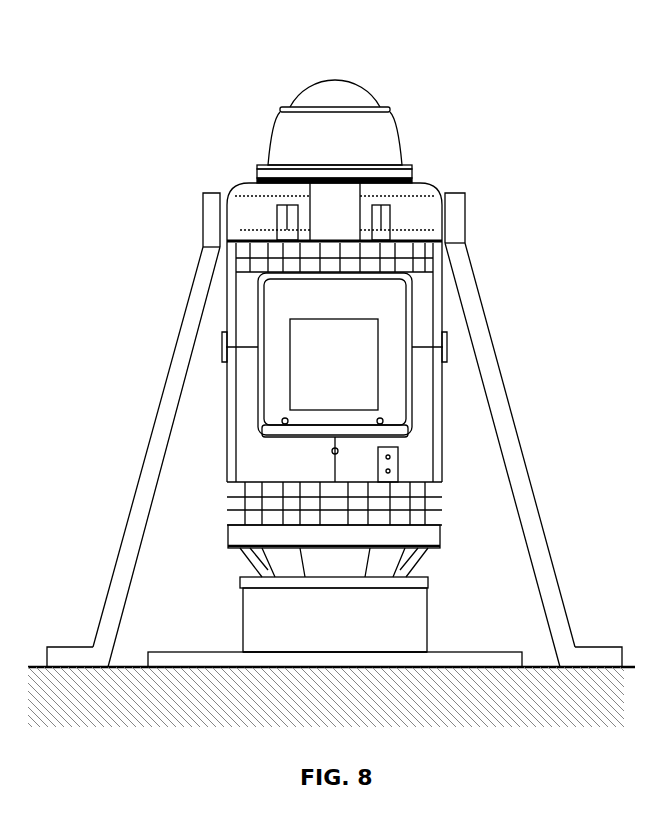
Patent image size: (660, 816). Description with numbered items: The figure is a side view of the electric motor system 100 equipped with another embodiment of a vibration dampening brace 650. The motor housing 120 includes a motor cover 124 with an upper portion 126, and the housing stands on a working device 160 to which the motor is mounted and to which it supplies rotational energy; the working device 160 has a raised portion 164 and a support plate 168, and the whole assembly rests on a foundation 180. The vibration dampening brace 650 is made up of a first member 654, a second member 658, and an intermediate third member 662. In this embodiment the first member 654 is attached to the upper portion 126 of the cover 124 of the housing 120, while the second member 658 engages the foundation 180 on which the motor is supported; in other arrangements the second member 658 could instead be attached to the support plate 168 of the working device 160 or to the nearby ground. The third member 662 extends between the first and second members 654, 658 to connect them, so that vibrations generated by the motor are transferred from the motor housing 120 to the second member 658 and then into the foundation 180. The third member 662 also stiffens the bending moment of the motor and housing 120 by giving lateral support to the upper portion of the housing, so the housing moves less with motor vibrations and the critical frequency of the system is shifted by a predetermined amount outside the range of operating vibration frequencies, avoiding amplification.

The vertical motor system 100 is at (232, 85).
The motor housing 120 is at (409, 350).
The motor cover 124 is at (420, 322).
The upper portion 126 is at (418, 207).
The working device 160 is at (447, 625).
The raised portion 164 is at (387, 631).
The support plate 168 is at (430, 660).
The foundation 180 is at (327, 706).
The vibration dampening brace 650 is at (160, 328).
The first member 654 is at (215, 217).
The second member 658 is at (65, 657).
The third member 662 is at (160, 458).